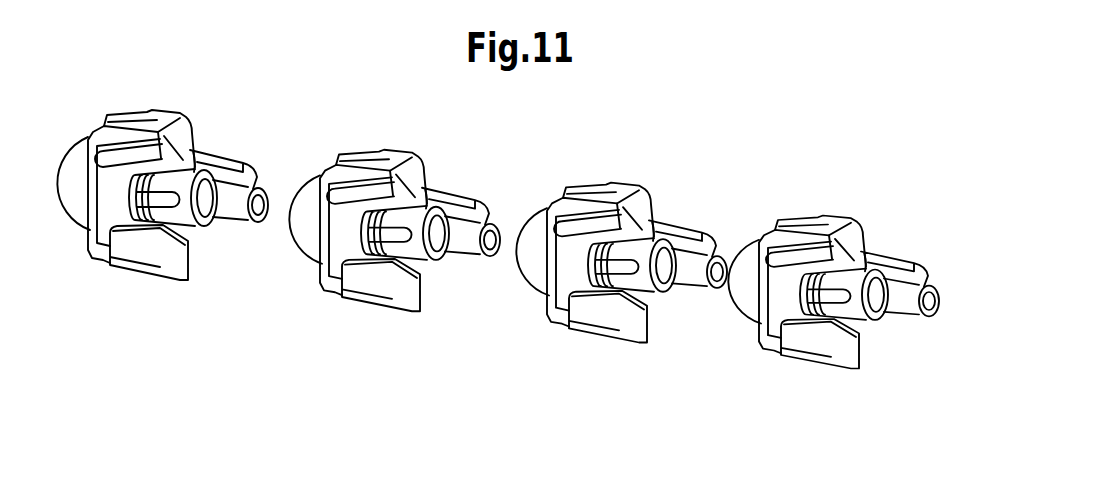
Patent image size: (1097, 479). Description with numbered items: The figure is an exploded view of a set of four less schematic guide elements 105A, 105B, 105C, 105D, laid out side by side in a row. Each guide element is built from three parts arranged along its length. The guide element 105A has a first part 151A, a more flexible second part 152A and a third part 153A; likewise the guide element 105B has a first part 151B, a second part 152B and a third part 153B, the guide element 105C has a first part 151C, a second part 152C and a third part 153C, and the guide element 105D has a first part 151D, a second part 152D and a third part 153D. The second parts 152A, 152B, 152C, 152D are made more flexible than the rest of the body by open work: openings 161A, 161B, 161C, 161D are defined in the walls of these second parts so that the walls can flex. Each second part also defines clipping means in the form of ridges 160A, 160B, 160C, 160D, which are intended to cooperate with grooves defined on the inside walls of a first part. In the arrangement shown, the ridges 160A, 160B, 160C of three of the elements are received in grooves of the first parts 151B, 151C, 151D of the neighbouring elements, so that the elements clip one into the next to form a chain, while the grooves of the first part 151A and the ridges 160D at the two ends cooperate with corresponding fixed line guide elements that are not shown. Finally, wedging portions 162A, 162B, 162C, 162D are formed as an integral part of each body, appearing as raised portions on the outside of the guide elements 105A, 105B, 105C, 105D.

The guide element 105A is at (127, 272).
The first part 151A is at (73, 162).
The second part 152A is at (192, 178).
The third part 153A is at (225, 212).
The ridge 160A is at (140, 223).
The opening 161A is at (142, 193).
The wedging portion 162A is at (137, 113).
The guide element 105B is at (310, 290).
The first part 151B is at (305, 195).
The second part 152B is at (424, 210).
The third part 153B is at (460, 246).
The ridge 160B is at (377, 247).
The opening 161B is at (378, 224).
The wedging portion 162B is at (377, 147).
The guide element 105C is at (665, 188).
The first part 151C is at (530, 224).
The second part 152C is at (650, 244).
The third part 153C is at (686, 276).
The ridge 160C is at (612, 290).
The opening 161C is at (602, 260).
The wedging portion 162C is at (603, 186).
The guide element 105D is at (866, 198).
The first part 151D is at (742, 302).
The second part 152D is at (858, 270).
The third part 153D is at (900, 310).
The ridge 160D is at (824, 293).
The opening 161D is at (816, 290).
The wedging portion 162D is at (836, 364).